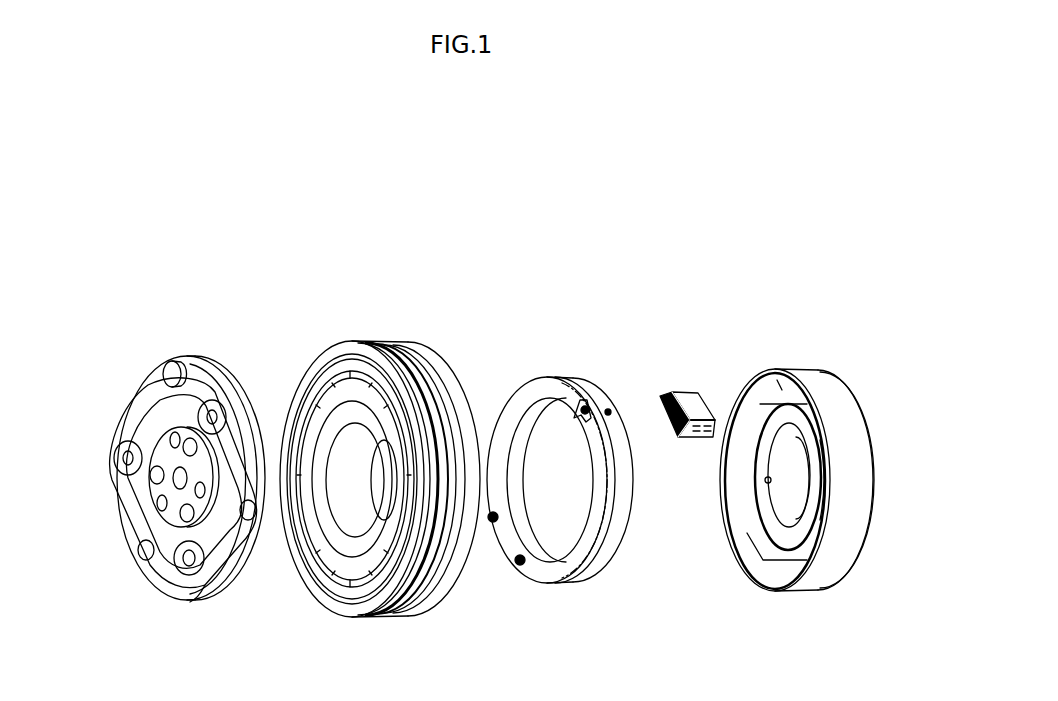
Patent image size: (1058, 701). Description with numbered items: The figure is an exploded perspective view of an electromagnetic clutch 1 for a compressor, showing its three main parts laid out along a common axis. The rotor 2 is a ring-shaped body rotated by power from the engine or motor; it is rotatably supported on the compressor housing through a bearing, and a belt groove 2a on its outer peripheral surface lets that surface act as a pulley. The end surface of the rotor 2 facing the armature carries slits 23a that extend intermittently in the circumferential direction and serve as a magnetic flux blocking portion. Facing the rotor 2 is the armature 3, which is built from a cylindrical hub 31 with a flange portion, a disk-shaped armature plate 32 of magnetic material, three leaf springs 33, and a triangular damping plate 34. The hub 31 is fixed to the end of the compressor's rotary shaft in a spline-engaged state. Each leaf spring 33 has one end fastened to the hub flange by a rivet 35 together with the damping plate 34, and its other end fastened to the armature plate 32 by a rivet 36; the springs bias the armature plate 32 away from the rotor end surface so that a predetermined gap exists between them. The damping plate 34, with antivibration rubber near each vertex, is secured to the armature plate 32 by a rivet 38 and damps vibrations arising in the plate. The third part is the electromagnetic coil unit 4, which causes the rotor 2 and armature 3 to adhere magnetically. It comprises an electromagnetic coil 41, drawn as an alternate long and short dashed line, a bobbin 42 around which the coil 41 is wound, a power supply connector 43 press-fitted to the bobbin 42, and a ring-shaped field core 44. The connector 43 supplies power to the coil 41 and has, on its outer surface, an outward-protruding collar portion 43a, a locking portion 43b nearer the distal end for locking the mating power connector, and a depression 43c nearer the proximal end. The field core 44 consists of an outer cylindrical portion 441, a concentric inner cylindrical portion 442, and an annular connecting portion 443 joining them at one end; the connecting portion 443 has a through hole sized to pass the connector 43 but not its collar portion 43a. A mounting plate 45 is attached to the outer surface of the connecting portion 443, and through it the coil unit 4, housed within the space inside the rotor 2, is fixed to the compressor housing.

The electromagnetic clutch 1 is at (470, 206).
The rotor 2 is at (355, 340).
The belt groove 2a is at (397, 348).
The slits 23a is at (330, 372).
The armature 3 is at (165, 338).
The hub 31 is at (150, 435).
The armature plate 32 is at (165, 595).
The leaf springs 33 is at (243, 437).
The damping plate 34 is at (207, 597).
The rivet 35 is at (190, 440).
The rivet 36 is at (165, 372).
The rivet 38 is at (213, 417).
The electromagnetic coil unit 4 is at (508, 306).
The electromagnetic coil 41 is at (612, 560).
The bobbin 42 is at (550, 362).
The power supply connector 43 is at (682, 382).
The collar portion 43a is at (665, 432).
The locking portion 43b is at (693, 440).
The depression 43c is at (662, 407).
The field core 44 is at (806, 358).
The outer cylindrical portion 441 is at (836, 385).
The inner cylindrical portion 442 is at (747, 533).
The connecting portion 443 is at (777, 380).
The mounting plate 45 is at (870, 527).